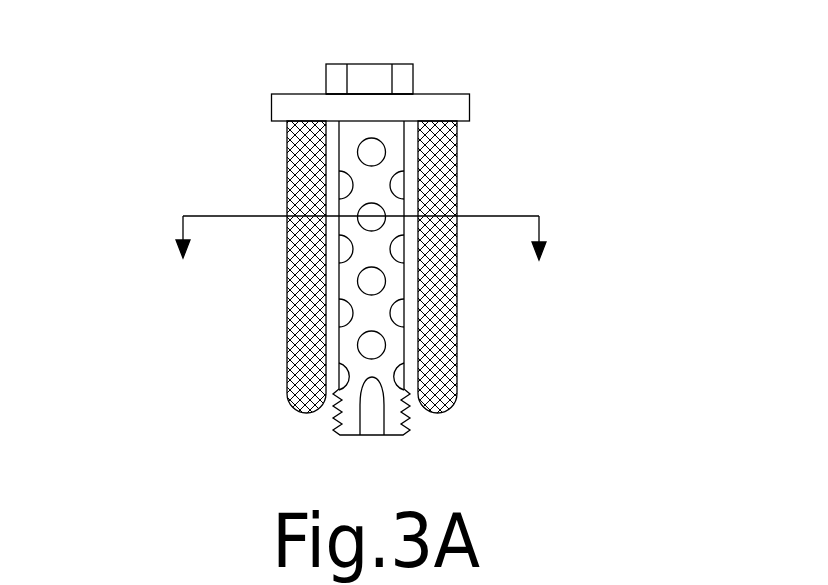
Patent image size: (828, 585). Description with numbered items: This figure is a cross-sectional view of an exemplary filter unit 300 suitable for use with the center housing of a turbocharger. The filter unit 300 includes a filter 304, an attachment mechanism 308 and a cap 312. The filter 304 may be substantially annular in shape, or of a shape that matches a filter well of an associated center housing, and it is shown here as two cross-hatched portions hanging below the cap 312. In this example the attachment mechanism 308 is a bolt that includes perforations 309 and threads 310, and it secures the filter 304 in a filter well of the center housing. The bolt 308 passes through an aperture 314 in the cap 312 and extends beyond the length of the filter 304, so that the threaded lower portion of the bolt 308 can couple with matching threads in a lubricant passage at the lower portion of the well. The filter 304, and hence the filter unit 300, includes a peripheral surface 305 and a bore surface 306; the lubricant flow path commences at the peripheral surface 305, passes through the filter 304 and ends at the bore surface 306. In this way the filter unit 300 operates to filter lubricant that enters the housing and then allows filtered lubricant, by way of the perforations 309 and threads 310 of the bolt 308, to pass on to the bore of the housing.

The filter unit 300 is at (150, 35).
The filter 304 is at (457, 158).
The peripheral surface 305 is at (457, 203).
The bore surface 306 is at (456, 367).
The attachment mechanism 308 is at (413, 64).
The perforations 309 is at (371, 347).
The threads 310 is at (405, 432).
The cap 312 is at (469, 93).
The aperture 314 is at (326, 92).